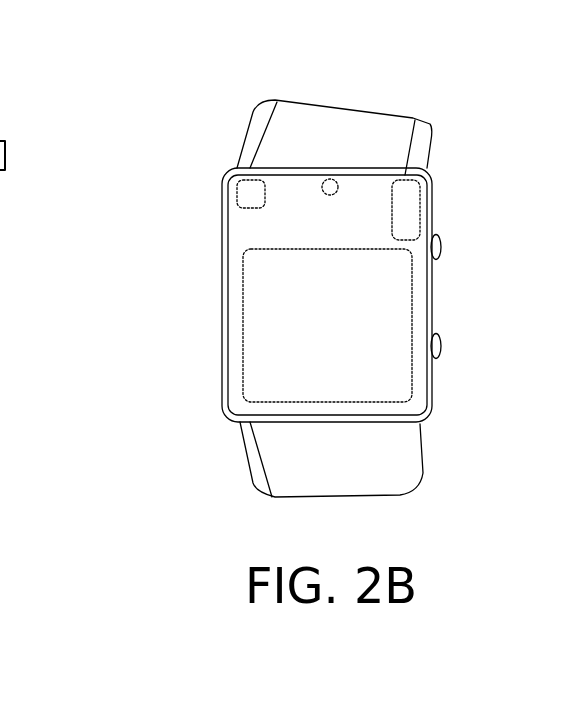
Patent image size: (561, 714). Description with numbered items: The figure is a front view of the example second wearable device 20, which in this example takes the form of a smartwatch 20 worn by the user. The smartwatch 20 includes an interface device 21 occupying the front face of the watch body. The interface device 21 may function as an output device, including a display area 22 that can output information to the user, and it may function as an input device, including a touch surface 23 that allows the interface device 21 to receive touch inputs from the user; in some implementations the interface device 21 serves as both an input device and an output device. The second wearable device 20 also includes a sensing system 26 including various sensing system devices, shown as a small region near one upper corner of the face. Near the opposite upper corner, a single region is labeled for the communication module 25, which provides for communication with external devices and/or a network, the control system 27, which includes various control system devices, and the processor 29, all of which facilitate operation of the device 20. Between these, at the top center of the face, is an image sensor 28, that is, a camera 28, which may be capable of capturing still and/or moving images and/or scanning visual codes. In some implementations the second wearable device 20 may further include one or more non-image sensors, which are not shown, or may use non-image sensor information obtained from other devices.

The second wearable device 20 is at (466, 88).
The interface device 21 is at (210, 297).
The display area 22 is at (250, 275).
The touch surface 23 is at (242, 222).
The communication module 25 is at (472, 196).
The sensing system 26 is at (232, 183).
The control system 27 is at (472, 196).
The image sensor 28 is at (332, 179).
The processor 29 is at (415, 202).